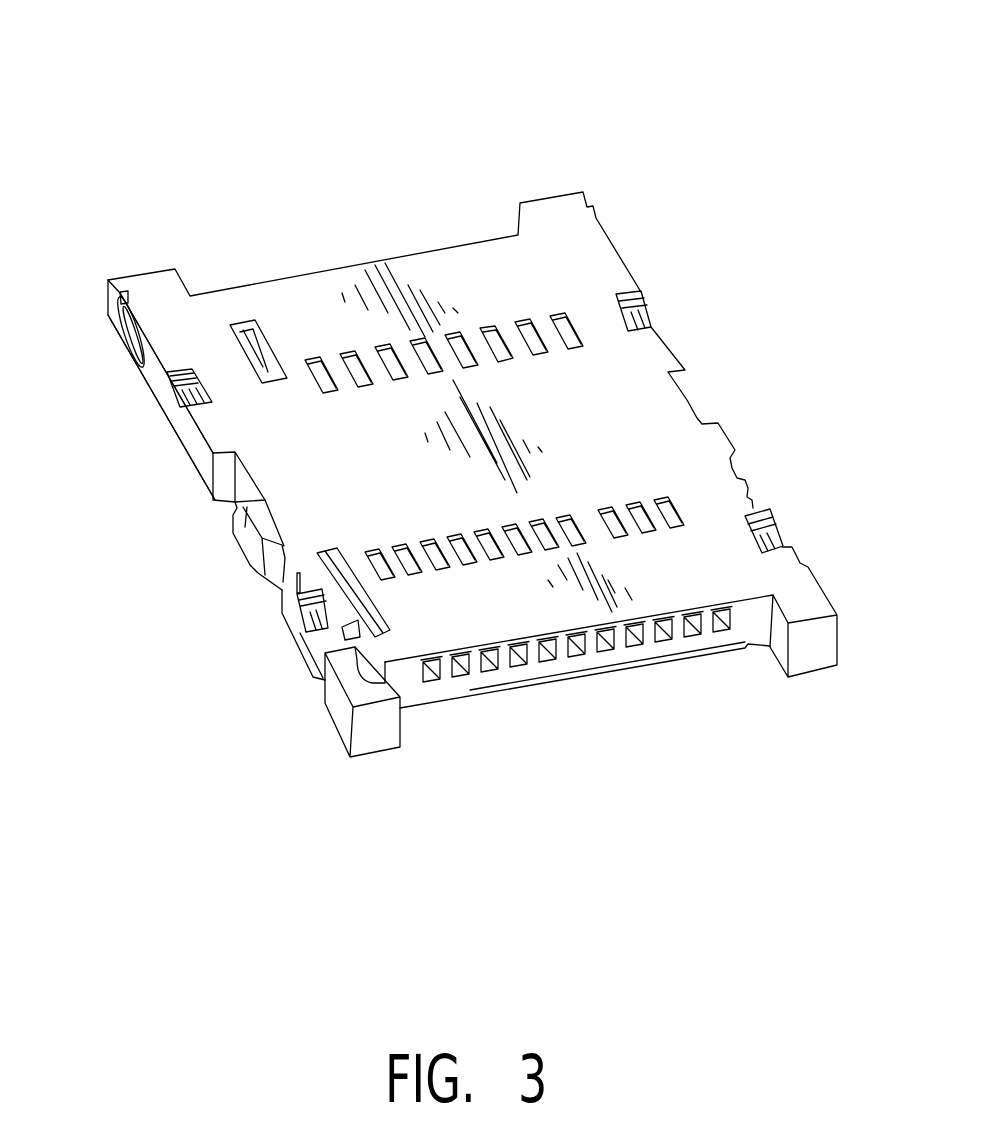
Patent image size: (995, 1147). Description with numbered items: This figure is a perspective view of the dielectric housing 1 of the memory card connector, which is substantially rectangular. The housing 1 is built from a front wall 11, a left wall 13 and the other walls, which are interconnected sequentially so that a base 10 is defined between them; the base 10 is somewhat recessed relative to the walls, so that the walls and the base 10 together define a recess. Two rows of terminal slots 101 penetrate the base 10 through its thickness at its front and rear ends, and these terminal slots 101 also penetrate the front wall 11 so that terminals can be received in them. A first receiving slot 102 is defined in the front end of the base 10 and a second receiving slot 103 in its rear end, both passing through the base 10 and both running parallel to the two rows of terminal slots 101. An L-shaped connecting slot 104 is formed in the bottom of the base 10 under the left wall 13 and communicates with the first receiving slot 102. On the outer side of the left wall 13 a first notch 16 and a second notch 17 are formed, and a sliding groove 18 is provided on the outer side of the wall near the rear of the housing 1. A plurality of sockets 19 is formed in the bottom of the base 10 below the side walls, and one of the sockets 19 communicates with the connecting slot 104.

The dielectric housing 1 is at (85, 47).
The base 10 is at (647, 373).
The front wall 11 is at (677, 648).
The left wall 13 is at (193, 453).
The first notch 16 is at (213, 487).
The second notch 17 is at (273, 558).
The sliding groove 18 is at (127, 343).
The sockets 19 is at (643, 298).
The terminal slots 101 is at (563, 658).
The first receiving slot 102 is at (297, 618).
The second receiving slot 103 is at (253, 347).
The connecting slot 104 is at (392, 680).